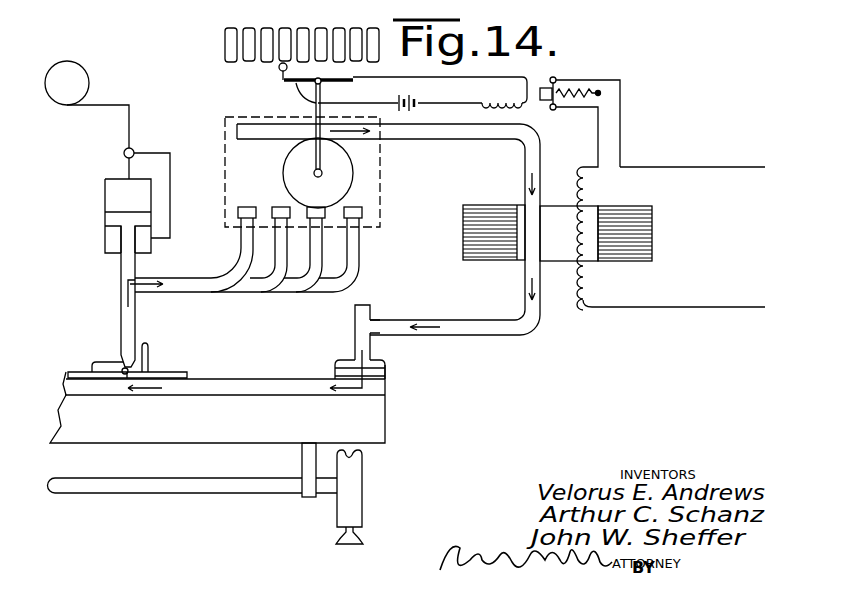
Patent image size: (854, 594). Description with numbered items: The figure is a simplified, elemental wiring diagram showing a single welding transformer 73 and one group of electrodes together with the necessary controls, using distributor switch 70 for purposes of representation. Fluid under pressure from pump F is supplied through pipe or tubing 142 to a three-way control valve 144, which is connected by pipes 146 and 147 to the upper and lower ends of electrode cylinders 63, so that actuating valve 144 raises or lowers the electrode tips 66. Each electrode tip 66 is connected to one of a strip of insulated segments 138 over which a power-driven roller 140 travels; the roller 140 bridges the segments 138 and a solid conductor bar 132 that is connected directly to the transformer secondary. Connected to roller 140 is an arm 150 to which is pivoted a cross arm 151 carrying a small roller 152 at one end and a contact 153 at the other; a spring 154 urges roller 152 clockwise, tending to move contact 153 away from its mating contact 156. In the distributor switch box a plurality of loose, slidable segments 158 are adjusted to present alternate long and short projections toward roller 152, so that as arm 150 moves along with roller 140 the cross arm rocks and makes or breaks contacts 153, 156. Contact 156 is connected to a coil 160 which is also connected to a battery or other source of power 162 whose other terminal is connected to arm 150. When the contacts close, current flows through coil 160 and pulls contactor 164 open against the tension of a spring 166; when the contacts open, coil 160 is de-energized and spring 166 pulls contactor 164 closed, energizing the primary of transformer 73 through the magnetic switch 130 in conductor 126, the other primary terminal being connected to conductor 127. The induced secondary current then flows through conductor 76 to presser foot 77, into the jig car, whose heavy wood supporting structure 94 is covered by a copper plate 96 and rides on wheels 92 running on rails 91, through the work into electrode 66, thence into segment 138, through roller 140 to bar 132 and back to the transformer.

The pump F is at (86, 73).
The pipe or tubing 142 is at (129, 105).
The control valve 144 is at (124, 153).
The pipe 146 is at (126, 172).
The pipe 147 is at (170, 153).
The electrode cylinder 63 is at (105, 200).
The electrode tip 66 is at (118, 341).
The distributor switch 70 is at (225, 119).
The insulated segments 138 is at (278, 209).
The roller 140 is at (318, 173).
The arm 150 is at (315, 120).
The cross arm 151 is at (281, 82).
The small roller 152 is at (279, 69).
The contact 153 is at (351, 82).
The spring 154 is at (307, 92).
The mating contact 156 is at (359, 80).
The segments 158 is at (321, 28).
The coil 160 is at (485, 99).
The battery or other source of power 162 is at (412, 100).
The contactor 164 is at (543, 88).
The switch 130 is at (554, 78).
The spring 166 is at (584, 91).
The conductor 126 is at (692, 161).
The conductor 127 is at (678, 318).
The transformer 73 is at (644, 207).
The solid conductor bar 132 is at (453, 139).
The conductor 76 is at (428, 320).
The presser foot 77 is at (386, 369).
The copper plate 96 is at (248, 390).
The wood supporting structure 94 is at (217, 404).
The wheels 92 is at (352, 484).
The rails 91 is at (344, 537).